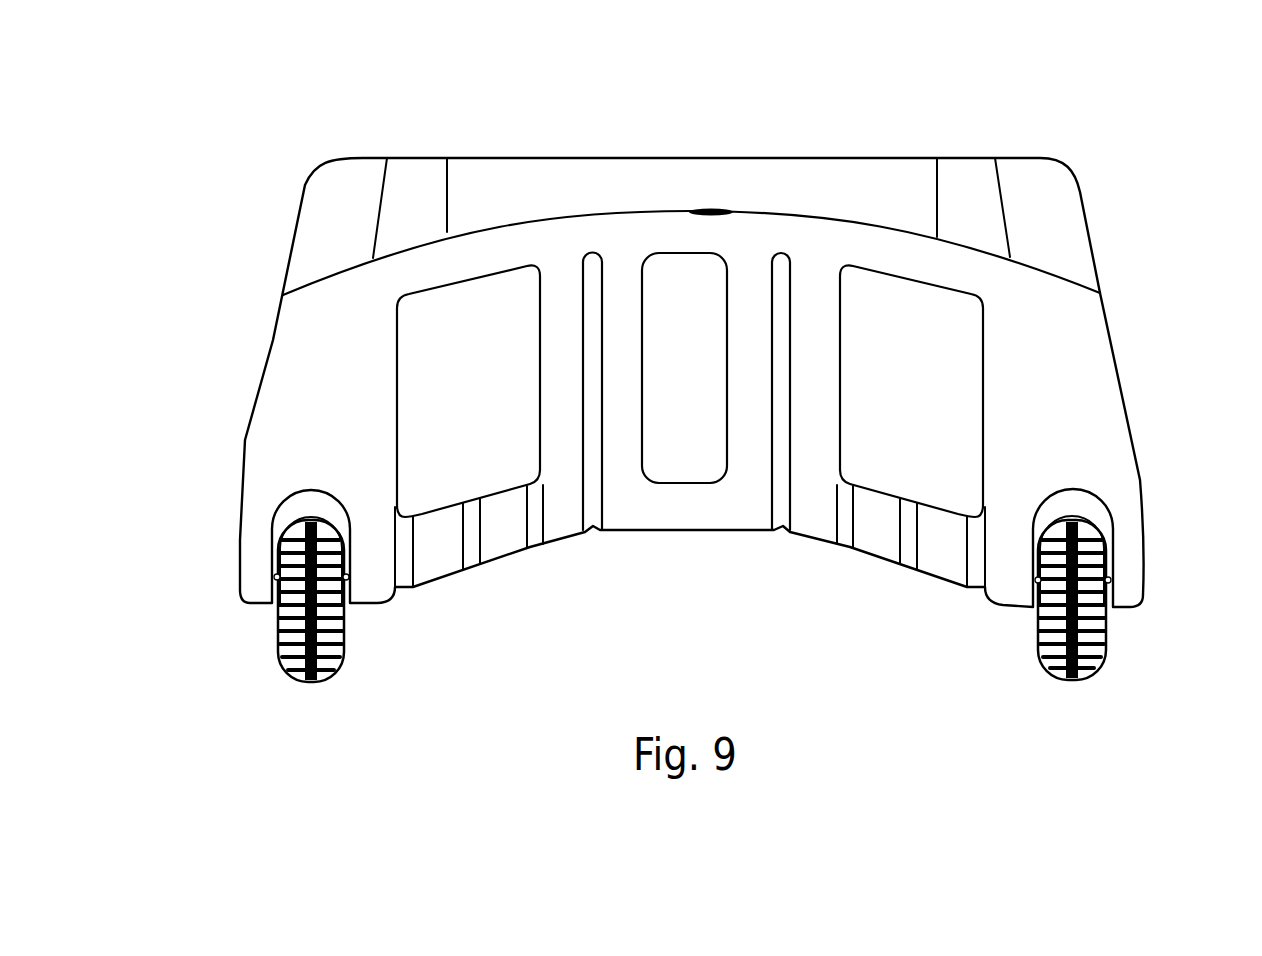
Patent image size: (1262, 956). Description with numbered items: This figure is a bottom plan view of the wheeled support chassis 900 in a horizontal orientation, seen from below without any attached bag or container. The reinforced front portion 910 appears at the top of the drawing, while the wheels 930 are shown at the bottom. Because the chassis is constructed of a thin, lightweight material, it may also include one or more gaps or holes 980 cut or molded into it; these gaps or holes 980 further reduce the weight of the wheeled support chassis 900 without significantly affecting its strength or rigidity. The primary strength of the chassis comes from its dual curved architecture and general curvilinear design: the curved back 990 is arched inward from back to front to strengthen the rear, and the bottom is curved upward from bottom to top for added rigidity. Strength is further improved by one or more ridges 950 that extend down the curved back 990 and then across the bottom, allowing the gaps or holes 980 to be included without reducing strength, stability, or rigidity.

The wheeled support chassis 900 is at (237, 137).
The reinforced front portion 910 is at (787, 190).
The wheels 930 is at (1107, 647).
The ridges 950 is at (465, 553).
The gaps or holes 980 is at (935, 378).
The curved back 990 is at (680, 512).